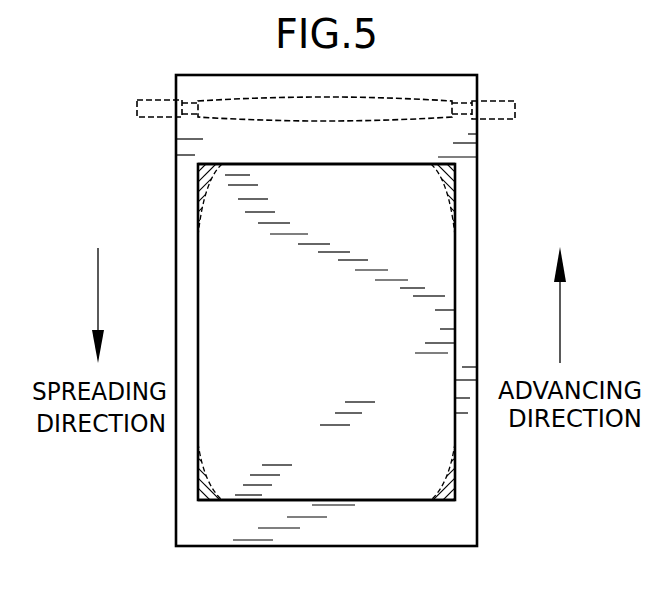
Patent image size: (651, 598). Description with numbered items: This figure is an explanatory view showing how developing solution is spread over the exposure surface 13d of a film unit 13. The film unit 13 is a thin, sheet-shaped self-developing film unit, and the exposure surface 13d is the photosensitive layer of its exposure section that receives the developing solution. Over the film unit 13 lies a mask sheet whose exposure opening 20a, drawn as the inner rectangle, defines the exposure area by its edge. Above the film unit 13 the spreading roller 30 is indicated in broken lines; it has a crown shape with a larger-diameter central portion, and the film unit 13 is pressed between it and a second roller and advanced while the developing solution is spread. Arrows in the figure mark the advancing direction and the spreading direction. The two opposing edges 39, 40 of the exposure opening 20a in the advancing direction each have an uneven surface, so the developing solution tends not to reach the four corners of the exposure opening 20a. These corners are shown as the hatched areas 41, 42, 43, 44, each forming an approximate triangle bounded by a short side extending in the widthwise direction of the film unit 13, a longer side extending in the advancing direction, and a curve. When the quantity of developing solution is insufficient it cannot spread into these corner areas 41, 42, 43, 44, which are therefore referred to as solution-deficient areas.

The film unit 13 is at (505, 465).
The exposure surface 13d is at (403, 393).
The exposure opening 20a is at (198, 333).
The spreading roller 30 is at (146, 126).
The upper edge of sheet 39 is at (318, 164).
The lower edge of sheet 40 is at (308, 500).
The solution-deficient area 41 is at (198, 196).
The solution-deficient area 42 is at (614, 163).
The solution-deficient area 43 is at (198, 481).
The solution-deficient area 44 is at (455, 500).